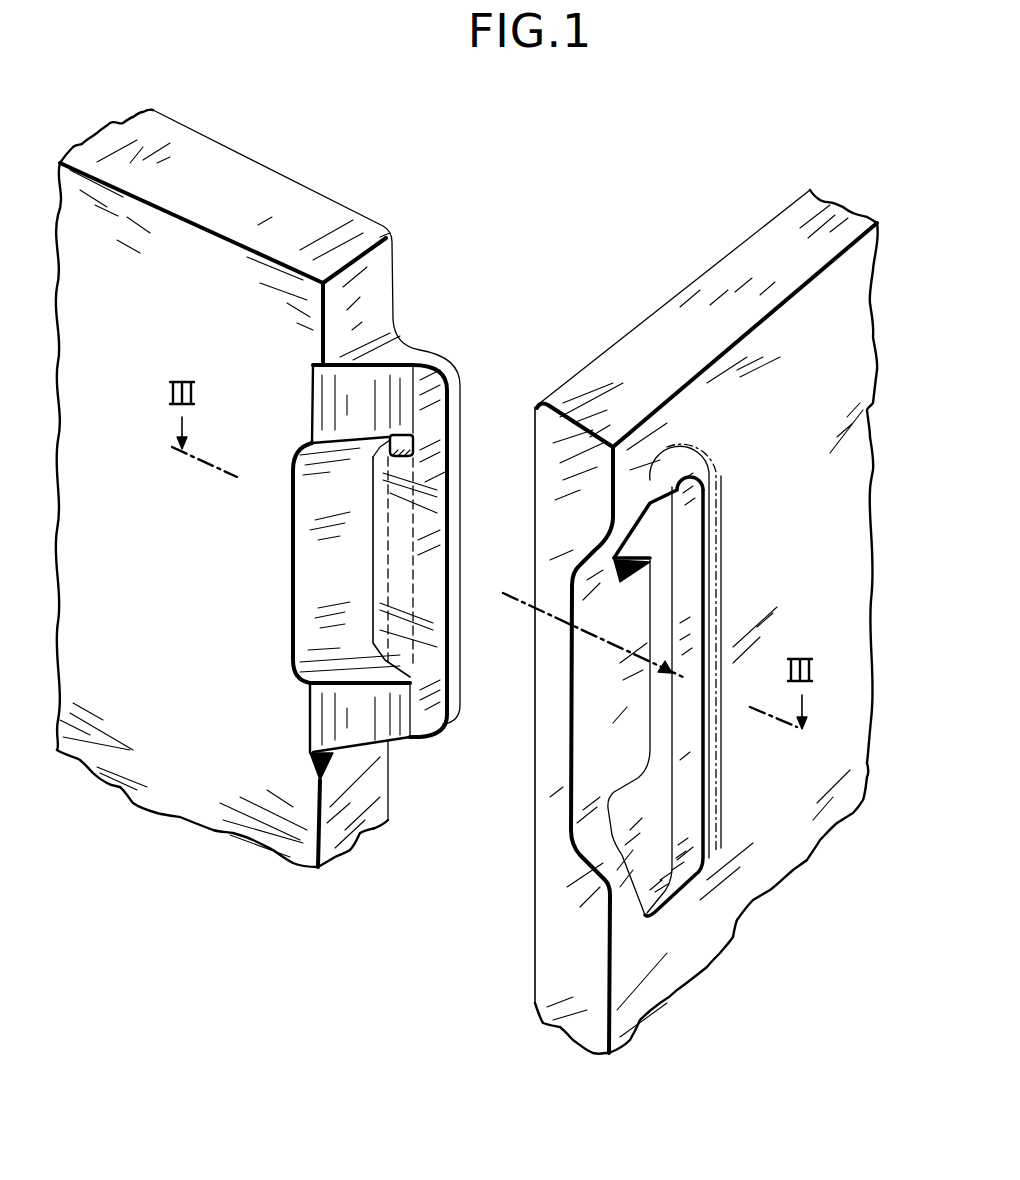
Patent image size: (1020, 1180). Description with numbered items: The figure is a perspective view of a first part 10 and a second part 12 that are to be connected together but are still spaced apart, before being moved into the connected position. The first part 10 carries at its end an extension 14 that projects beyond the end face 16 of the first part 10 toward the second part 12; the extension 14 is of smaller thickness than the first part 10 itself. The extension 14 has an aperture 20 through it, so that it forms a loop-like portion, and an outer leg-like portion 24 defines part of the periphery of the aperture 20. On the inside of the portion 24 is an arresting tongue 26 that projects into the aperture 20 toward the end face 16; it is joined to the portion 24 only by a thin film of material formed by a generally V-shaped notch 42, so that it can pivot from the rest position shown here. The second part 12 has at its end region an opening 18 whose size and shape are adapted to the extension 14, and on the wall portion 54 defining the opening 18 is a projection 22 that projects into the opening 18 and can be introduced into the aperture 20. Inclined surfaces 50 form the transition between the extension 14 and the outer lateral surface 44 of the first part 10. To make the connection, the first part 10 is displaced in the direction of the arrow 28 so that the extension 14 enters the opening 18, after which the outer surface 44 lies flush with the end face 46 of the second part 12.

The first part 10 is at (243, 170).
The second part 12 is at (673, 303).
The extension 14 is at (437, 344).
The end face 16 is at (380, 285).
The opening 18 is at (657, 535).
The aperture 20 is at (407, 440).
The projection 22 is at (647, 610).
The outer leg-like portion 24 is at (450, 507).
The arresting tongue 26 is at (373, 573).
The arrow 28 is at (680, 663).
The V-shaped notch 42 is at (413, 577).
The outer lateral surface 44 is at (197, 763).
The end face of the second part 46 is at (790, 837).
The inclined surfaces 50 is at (350, 403).
The wall portion 54 is at (563, 503).